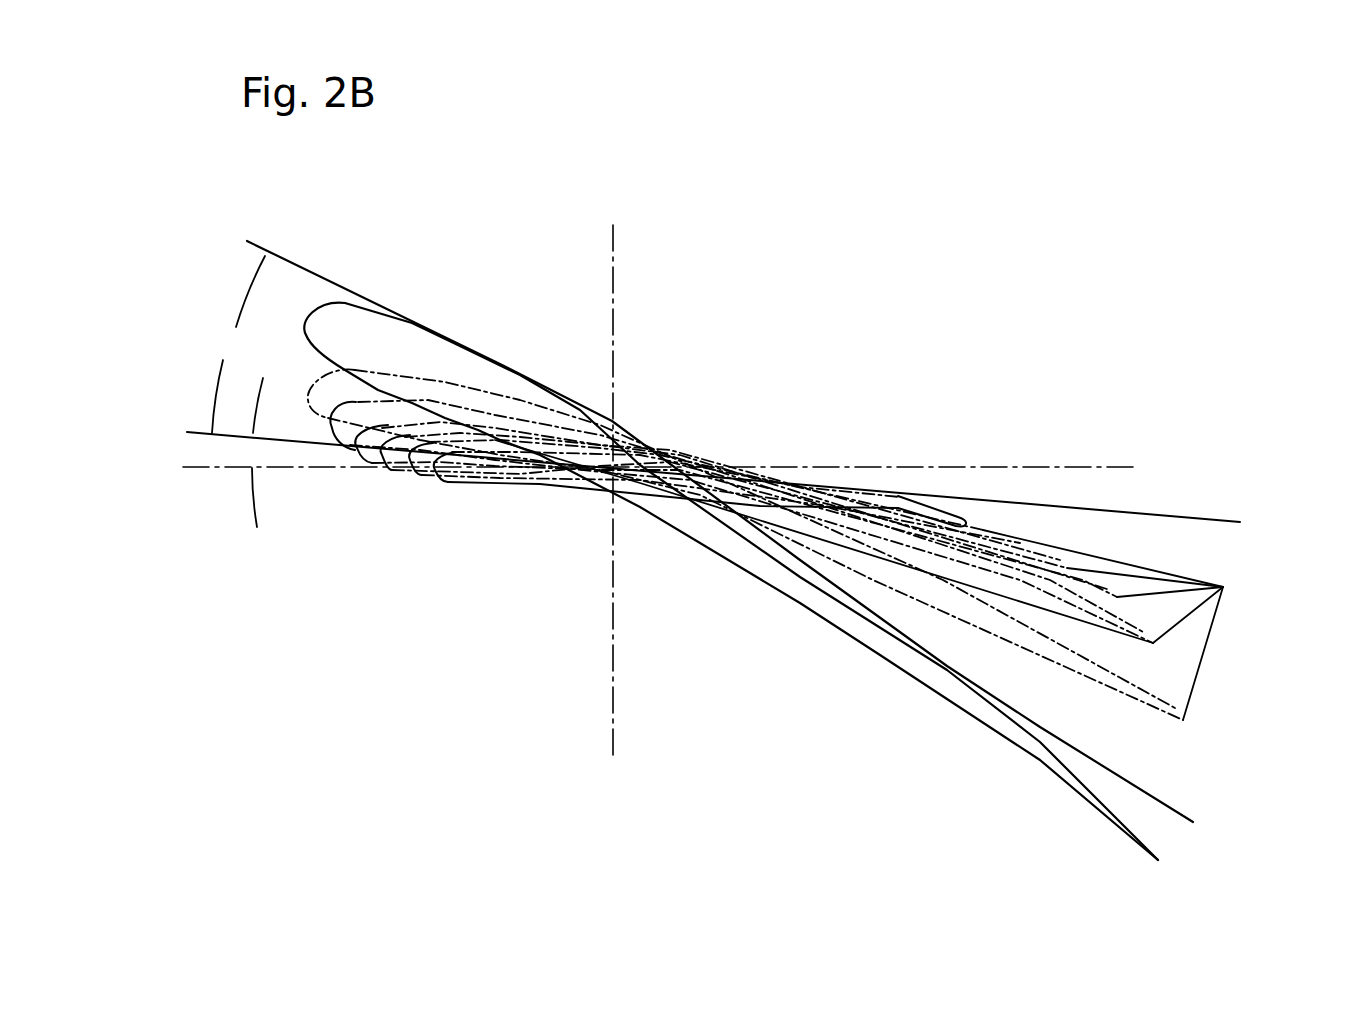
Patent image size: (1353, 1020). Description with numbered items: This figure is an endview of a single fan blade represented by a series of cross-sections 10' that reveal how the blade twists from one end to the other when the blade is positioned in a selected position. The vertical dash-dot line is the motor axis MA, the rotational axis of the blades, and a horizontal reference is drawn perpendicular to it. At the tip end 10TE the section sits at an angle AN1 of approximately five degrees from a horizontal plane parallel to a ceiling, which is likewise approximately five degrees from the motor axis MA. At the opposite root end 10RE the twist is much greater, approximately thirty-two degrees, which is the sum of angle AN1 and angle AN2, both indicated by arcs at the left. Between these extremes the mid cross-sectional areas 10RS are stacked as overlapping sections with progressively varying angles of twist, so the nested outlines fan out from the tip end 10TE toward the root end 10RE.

The cross-sections 10' is at (713, 482).
The motor axis MA is at (613, 258).
The angle AN1 is at (242, 455).
The angle AN2 is at (228, 343).
The tip end 10TE is at (945, 513).
The root end 10RE is at (813, 602).
The mid cross-sectional areas 10RS is at (1223, 587).